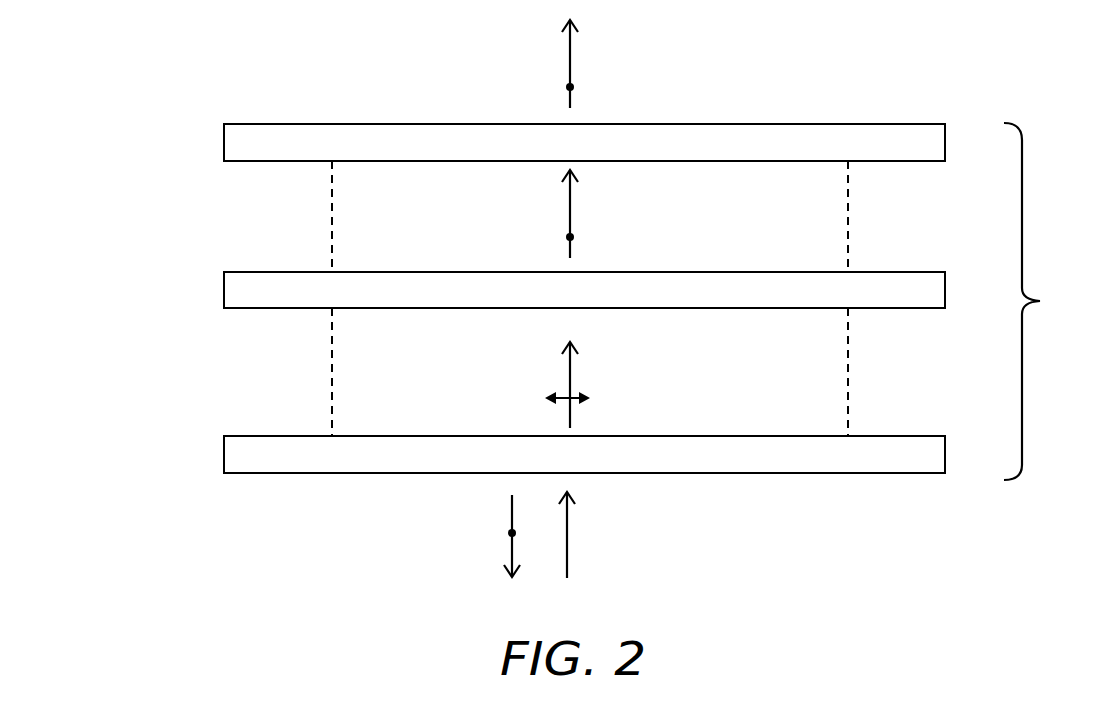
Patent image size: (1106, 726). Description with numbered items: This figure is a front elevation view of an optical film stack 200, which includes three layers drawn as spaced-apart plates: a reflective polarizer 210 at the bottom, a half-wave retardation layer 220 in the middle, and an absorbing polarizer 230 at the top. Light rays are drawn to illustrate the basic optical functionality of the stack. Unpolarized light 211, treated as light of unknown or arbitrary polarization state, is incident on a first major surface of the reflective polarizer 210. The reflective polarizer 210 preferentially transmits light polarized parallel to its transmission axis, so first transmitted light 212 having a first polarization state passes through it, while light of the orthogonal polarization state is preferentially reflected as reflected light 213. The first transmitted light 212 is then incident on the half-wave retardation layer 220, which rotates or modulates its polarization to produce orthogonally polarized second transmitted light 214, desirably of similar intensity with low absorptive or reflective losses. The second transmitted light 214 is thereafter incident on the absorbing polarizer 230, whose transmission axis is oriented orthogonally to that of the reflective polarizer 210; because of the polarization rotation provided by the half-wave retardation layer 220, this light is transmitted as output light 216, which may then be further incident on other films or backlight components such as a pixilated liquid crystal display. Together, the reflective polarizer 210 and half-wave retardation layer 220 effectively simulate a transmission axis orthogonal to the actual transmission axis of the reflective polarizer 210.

The optical film stack 200 is at (1048, 301).
The reflective polarizer 210 is at (246, 447).
The half-wave retardation layer 220 is at (246, 285).
The absorbing polarizer 230 is at (247, 138).
The unpolarized light 211 is at (569, 545).
The first transmitted light 212 is at (572, 371).
The reflected light 213 is at (510, 518).
The second transmitted light 214 is at (572, 202).
The output light 216 is at (572, 52).